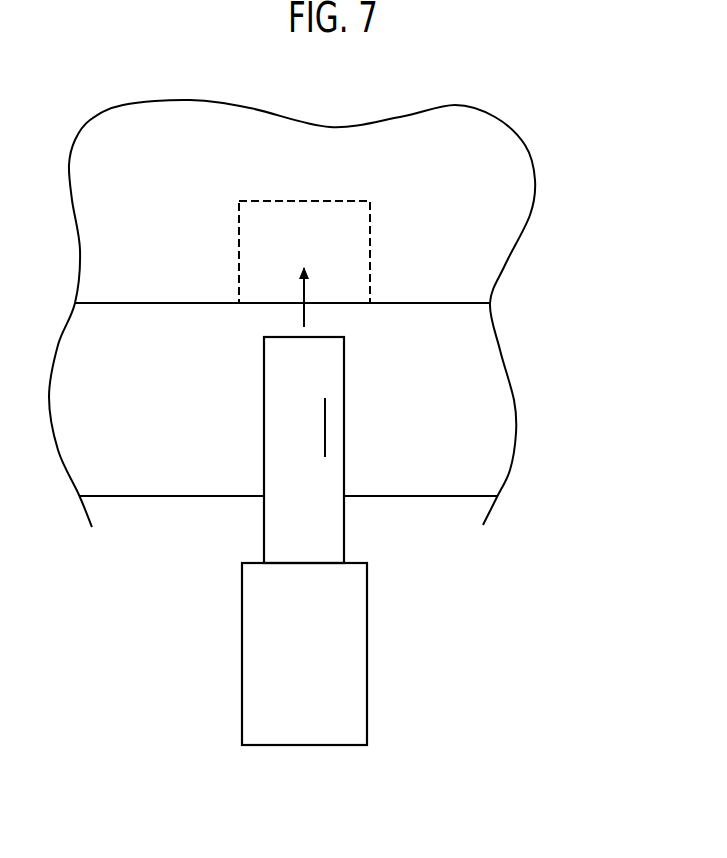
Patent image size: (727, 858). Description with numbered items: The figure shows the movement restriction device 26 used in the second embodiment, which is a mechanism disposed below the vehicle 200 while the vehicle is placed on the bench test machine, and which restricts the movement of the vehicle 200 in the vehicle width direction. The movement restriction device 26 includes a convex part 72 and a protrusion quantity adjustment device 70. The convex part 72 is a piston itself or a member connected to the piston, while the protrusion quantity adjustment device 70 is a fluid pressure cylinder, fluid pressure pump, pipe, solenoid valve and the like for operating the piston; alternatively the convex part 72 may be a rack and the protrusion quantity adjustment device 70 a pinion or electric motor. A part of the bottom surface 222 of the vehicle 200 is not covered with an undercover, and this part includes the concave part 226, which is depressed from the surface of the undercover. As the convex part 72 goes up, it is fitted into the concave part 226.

The vehicle 200 is at (474, 140).
The bottom surface 222 is at (148, 304).
The concave part 226 is at (325, 200).
The convex part 72 is at (264, 403).
The protrusion quantity adjustment device 70 is at (242, 655).
The movement restriction device 26 is at (312, 574).